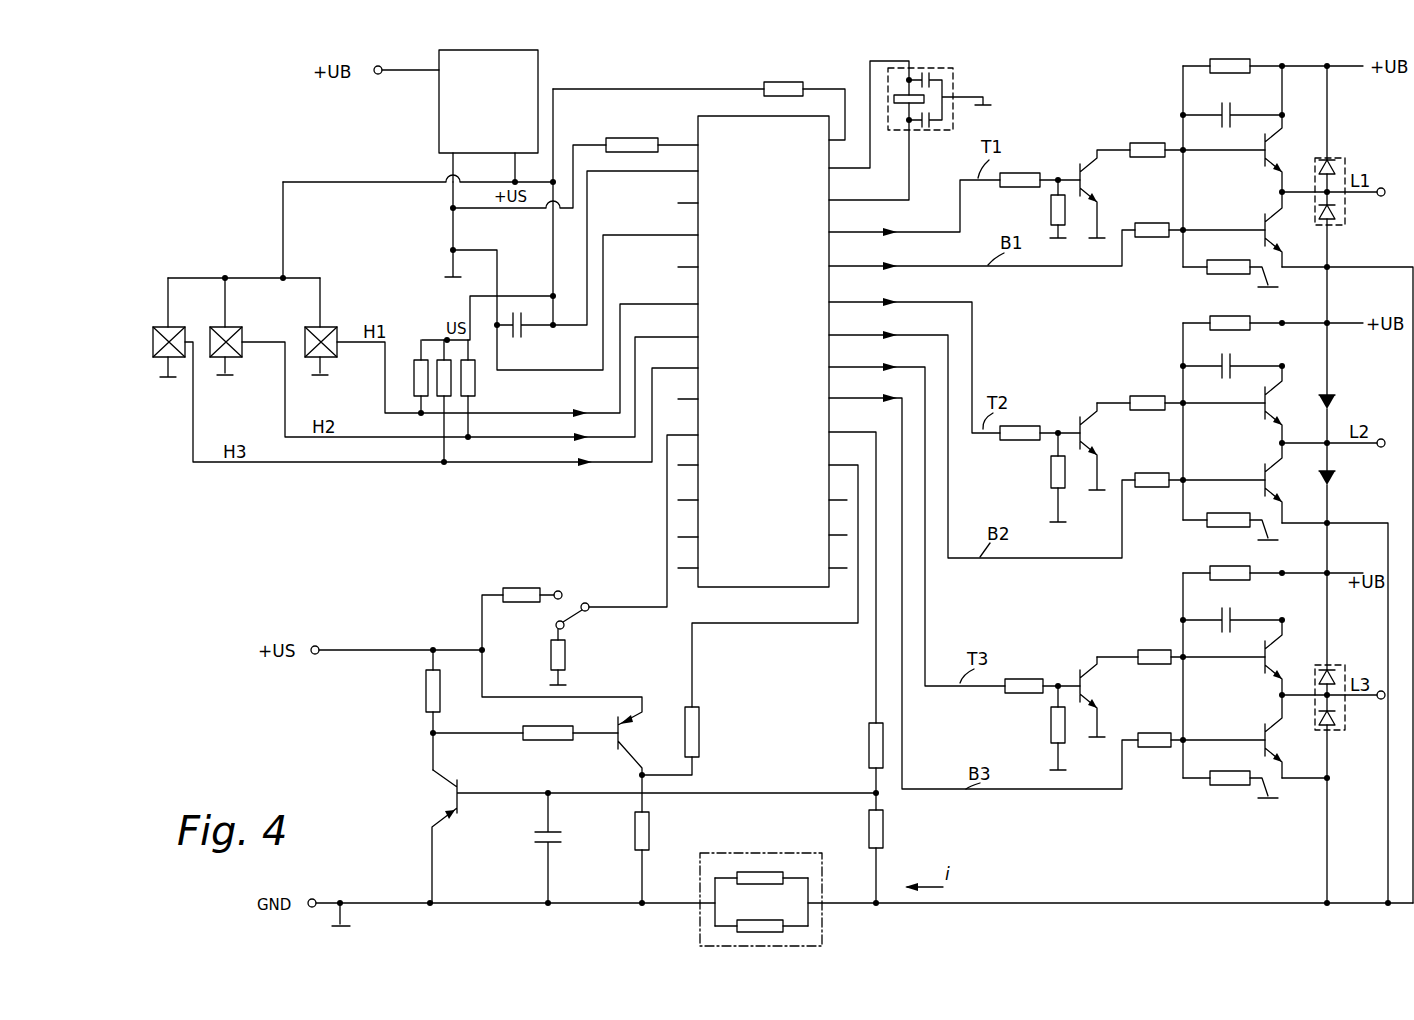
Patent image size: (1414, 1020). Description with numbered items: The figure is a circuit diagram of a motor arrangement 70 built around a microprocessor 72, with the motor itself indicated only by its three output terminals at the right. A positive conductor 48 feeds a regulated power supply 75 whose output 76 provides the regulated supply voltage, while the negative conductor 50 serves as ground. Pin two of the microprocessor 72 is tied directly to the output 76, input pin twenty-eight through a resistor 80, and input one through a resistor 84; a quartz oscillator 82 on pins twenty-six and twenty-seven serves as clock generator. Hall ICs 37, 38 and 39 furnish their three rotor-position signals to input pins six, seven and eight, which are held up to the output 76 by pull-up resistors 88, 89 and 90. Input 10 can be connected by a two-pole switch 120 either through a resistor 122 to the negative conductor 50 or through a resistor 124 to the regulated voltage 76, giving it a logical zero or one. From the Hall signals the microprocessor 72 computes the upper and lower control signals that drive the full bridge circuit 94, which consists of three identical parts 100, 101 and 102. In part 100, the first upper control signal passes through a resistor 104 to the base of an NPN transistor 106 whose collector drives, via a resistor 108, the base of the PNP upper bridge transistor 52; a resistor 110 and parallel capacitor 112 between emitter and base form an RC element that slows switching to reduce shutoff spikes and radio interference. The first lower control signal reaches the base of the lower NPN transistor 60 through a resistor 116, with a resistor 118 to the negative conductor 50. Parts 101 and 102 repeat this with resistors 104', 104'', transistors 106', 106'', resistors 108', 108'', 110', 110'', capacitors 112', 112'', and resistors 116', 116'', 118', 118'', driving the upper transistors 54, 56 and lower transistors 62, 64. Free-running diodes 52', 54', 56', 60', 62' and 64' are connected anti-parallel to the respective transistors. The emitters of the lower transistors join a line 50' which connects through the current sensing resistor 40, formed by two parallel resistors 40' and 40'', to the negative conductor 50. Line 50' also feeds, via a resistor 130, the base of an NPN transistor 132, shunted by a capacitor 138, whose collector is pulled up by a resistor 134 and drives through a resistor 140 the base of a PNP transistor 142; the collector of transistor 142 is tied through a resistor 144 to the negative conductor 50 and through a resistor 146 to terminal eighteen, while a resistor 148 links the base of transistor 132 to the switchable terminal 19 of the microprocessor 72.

The input pin 10 is at (626, 604).
The terminal 19 is at (839, 434).
The Hall IC 37 is at (330, 322).
The Hall IC 38 is at (237, 322).
The Hall IC 39 is at (174, 322).
The current measuring resistor 40 is at (761, 879).
The resistor 40' is at (765, 872).
The resistor 40'' is at (761, 914).
The positive conductor 48 is at (1335, 68).
The negative conductor 50 is at (596, 554).
The line 50' is at (1143, 889).
The upper bridge transistor 52 is at (1290, 129).
The free-running diode 52' is at (1344, 186).
The upper bridge transistor 54 is at (1290, 404).
The free-running diode 54' is at (1351, 394).
The upper bridge transistor 56 is at (1291, 657).
The free-running diode 56' is at (1348, 689).
The lower transistor 60 is at (1291, 229).
The free-running diode 60' is at (1352, 216).
The lower transistor 62 is at (1293, 483).
The free-running diode 62' is at (1352, 476).
The lower transistor 64 is at (1290, 736).
The free-running diode 64' is at (1351, 729).
The motor arrangement 70 is at (1049, 78).
The microprocessor 72 is at (775, 216).
The regulated power supply 75 is at (490, 112).
The output 76 is at (497, 180).
The resistor 80 is at (778, 82).
The quartz oscillator 82 is at (956, 68).
The resistor 84 is at (627, 136).
The pull-up resistor 88 is at (412, 381).
The pull-up resistor 89 is at (440, 338).
The pull-up resistor 90 is at (476, 391).
The full bridge circuit 94 is at (1161, 128).
The bridge circuit part 100 is at (1240, 198).
The bridge circuit part 101 is at (1263, 448).
The bridge circuit part 102 is at (1265, 710).
The resistor 104 is at (1040, 168).
The resistor 104' is at (1040, 412).
The resistor 104'' is at (1042, 665).
The NPN transistor 106 is at (1082, 182).
The NPN transistor 106' is at (1092, 471).
The NPN transistor 106'' is at (1094, 722).
The resistor 108 is at (1197, 170).
The resistor 108' is at (1181, 385).
The resistor 108'' is at (1181, 638).
The resistor 110 is at (1216, 84).
The resistor 110' is at (1267, 309).
The resistor 110'' is at (1208, 559).
The capacitor 112 is at (1232, 126).
The capacitor 112' is at (1232, 358).
The capacitor 112'' is at (1235, 608).
The resistor 116 is at (1196, 245).
The resistor 116' is at (1200, 462).
The resistor 116'' is at (1201, 723).
The resistor 118 is at (1231, 267).
The resistor 118' is at (1231, 521).
The resistor 118'' is at (1231, 781).
The two-pole switch 120 is at (578, 618).
The resistor 122 is at (550, 653).
The resistor 124 is at (520, 587).
The resistor 130 is at (868, 826).
The NPN transistor 132 is at (462, 809).
The resistor 134 is at (424, 699).
The capacitor 138 is at (541, 846).
The resistor 140 is at (535, 742).
The PNP transistor 142 is at (608, 742).
The resistor 144 is at (635, 829).
The resistor 146 is at (703, 724).
The resistor 148 is at (868, 749).